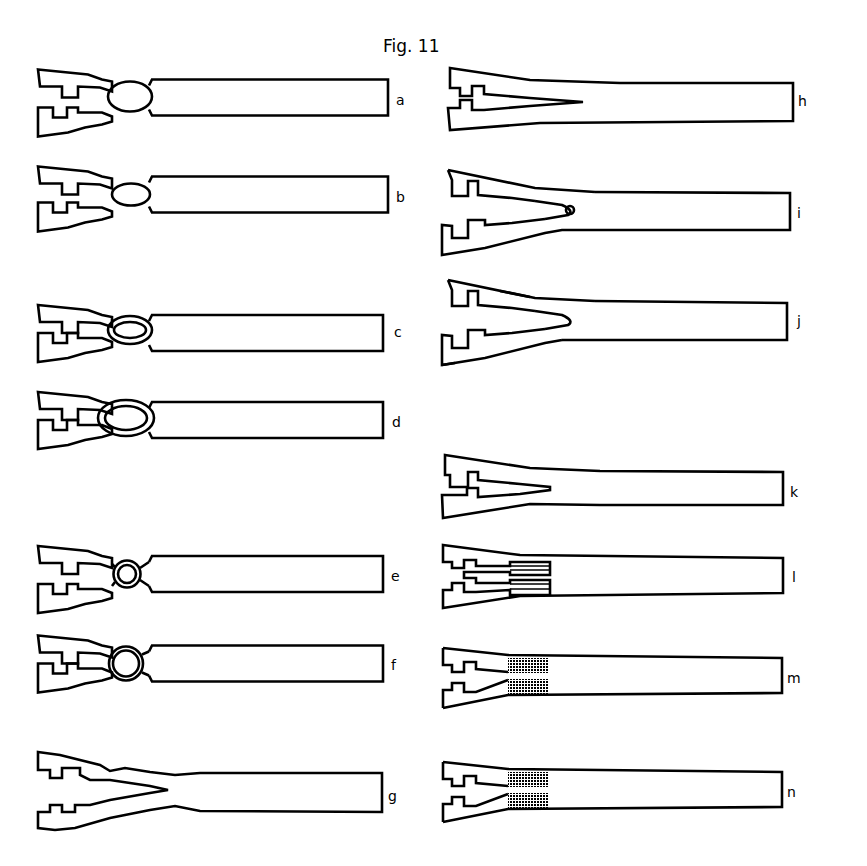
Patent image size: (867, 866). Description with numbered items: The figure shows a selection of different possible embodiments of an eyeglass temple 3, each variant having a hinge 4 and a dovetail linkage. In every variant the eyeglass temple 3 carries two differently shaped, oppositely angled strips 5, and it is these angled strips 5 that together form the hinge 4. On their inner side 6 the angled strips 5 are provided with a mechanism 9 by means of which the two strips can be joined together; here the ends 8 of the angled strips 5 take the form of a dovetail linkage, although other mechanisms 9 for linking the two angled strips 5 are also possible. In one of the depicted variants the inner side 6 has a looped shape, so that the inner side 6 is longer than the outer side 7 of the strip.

The eyeglass temple 3 is at (672, 322).
The hinge 4 is at (545, 335).
The angled strips 5 is at (493, 343).
The inner side 6 is at (451, 364).
The outer side 7 is at (557, 196).
The ends 8 is at (452, 288).
The mechanism 9 is at (75, 435).